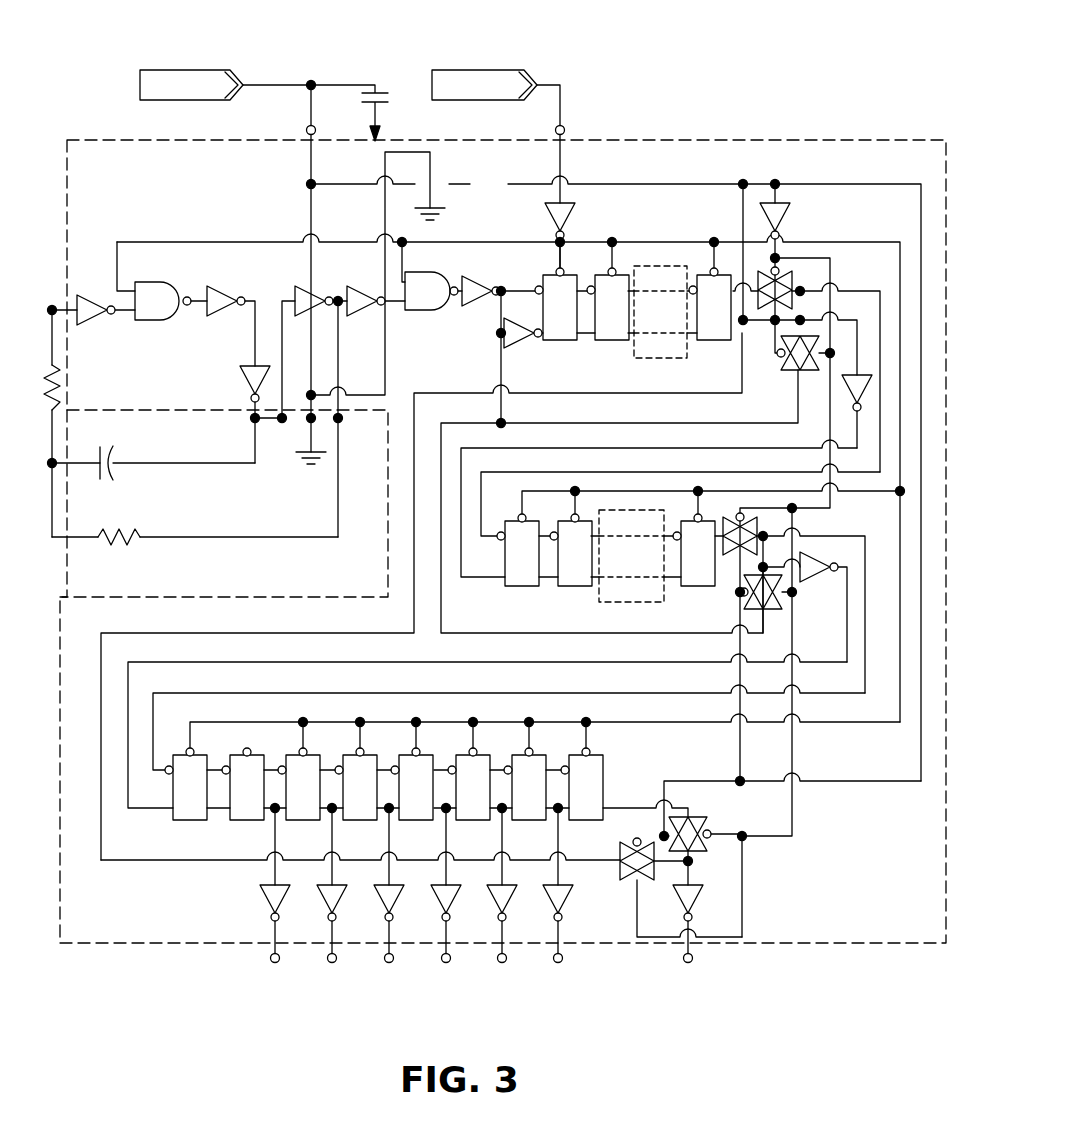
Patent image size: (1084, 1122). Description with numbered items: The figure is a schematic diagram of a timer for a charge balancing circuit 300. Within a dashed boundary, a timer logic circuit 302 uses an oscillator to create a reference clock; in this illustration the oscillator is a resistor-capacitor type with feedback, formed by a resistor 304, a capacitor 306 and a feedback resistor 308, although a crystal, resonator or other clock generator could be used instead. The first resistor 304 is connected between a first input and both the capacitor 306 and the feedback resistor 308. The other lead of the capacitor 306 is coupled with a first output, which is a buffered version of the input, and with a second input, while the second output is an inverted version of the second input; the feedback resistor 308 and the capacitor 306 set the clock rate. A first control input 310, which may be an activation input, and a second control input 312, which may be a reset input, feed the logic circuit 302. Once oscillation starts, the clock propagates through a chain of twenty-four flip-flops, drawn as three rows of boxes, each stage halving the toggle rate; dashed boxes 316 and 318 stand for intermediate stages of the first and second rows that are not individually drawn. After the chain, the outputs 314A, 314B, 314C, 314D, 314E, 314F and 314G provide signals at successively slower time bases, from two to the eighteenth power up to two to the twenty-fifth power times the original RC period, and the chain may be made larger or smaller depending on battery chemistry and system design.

The charge balancing circuit 300 is at (738, 63).
The timer logic circuit 302 is at (775, 137).
The resistor 304 is at (62, 397).
The capacitor 306 is at (113, 475).
The feedback resistor 308 is at (125, 545).
The first control input 310 is at (196, 68).
The second control input 312 is at (481, 68).
The 18th output 314A is at (268, 955).
The 19th output 314B is at (325, 955).
The 20th output 314C is at (382, 955).
The 22nd output 314D is at (452, 953).
The 23rd output 314E is at (508, 953).
The 24th output 314F is at (565, 953).
The 25th output 314G is at (692, 952).
The additional flip-flop stages 316 is at (658, 360).
The additional flip-flop stages 318 is at (617, 606).